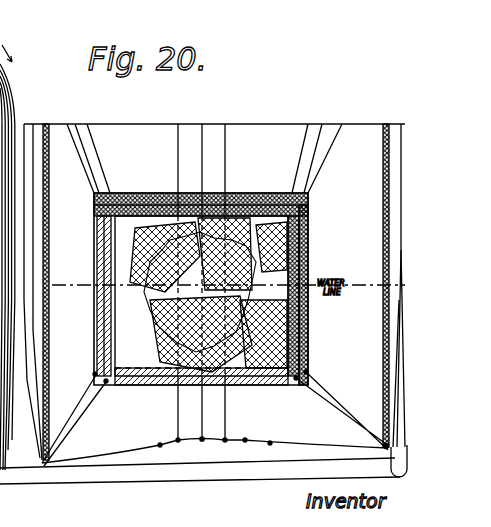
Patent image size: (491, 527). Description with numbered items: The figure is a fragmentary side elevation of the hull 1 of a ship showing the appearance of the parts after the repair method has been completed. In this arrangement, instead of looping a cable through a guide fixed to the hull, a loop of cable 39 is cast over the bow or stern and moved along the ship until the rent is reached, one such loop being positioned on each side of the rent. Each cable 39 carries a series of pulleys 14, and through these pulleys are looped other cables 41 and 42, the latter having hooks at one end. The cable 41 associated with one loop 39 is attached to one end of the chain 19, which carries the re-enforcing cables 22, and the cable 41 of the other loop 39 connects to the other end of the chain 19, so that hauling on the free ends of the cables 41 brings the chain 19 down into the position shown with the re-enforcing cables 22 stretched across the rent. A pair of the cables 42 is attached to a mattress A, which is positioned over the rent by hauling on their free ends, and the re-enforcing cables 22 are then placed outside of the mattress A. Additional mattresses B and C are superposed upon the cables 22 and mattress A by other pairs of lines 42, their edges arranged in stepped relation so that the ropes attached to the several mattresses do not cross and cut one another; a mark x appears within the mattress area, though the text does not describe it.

The cable loop 39 is at (47, 123).
The re-enforcing cables 22 is at (244, 115).
The mattress A is at (258, 193).
The second mattress B is at (306, 225).
The third mattress C is at (308, 253).
The marking x is at (166, 303).
The cables 42 is at (78, 428).
The cable 41 is at (133, 453).
The chain 19 is at (213, 450).
The pulleys 14 is at (385, 443).
The hull 1 is at (83, 473).